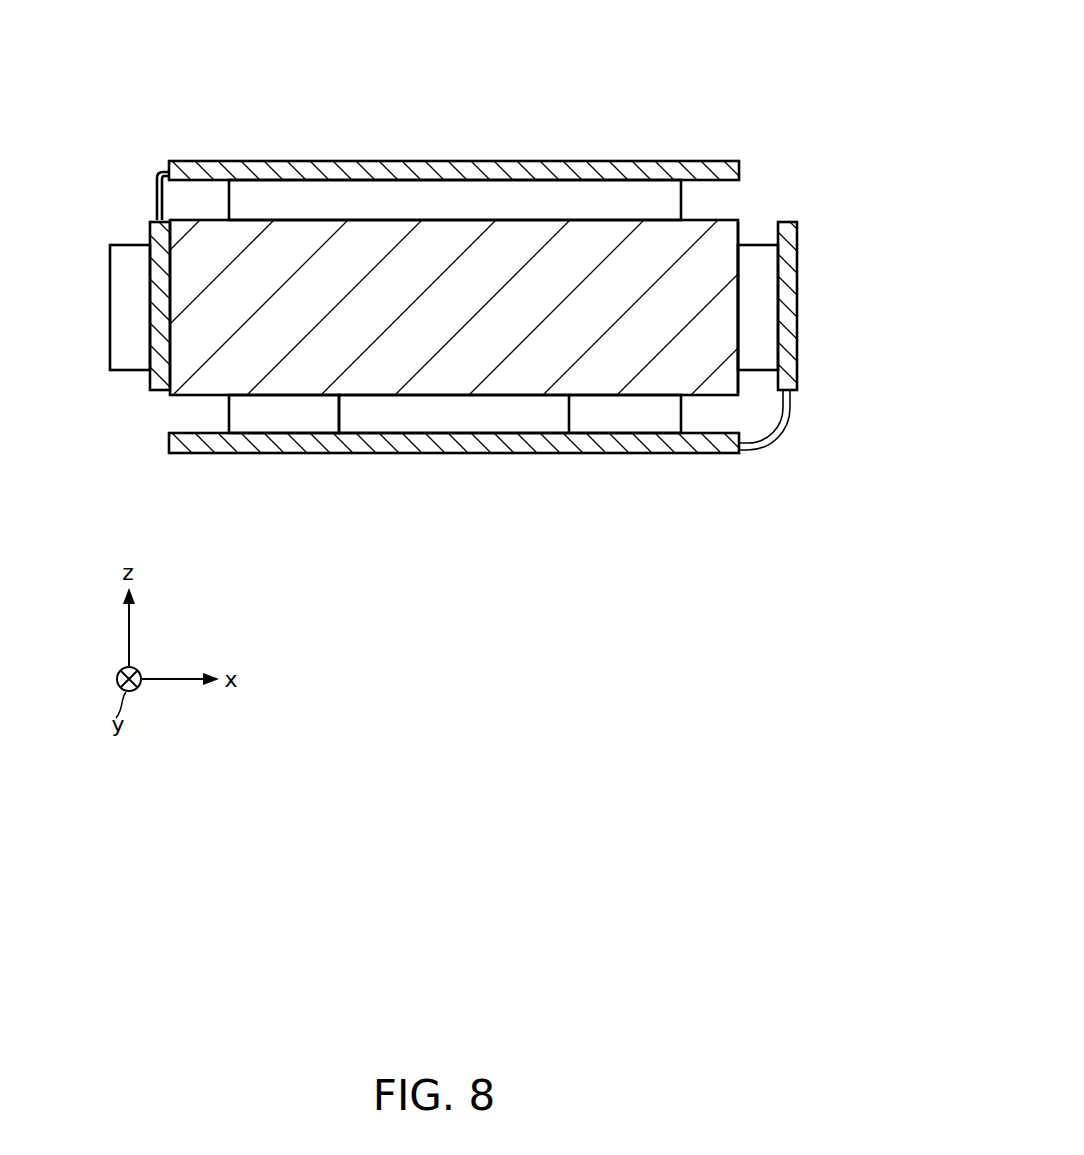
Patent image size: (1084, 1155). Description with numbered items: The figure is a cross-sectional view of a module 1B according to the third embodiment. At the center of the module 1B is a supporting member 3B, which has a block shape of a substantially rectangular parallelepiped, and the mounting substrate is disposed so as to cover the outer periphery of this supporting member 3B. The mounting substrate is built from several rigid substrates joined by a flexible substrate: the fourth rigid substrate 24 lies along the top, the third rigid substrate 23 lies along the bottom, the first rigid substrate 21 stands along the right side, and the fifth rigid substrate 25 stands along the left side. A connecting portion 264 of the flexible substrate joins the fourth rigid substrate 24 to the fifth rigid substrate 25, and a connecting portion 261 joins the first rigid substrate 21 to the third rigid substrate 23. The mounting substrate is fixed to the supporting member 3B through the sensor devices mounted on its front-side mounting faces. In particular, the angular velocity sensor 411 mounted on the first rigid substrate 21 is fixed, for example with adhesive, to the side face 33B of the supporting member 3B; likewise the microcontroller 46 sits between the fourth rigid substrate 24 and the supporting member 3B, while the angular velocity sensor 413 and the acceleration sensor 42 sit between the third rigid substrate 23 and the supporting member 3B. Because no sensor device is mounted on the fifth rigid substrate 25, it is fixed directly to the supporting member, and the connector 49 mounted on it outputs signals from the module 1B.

The module 1B is at (703, 95).
The supporting member 3B is at (303, 290).
The fourth rigid substrate 24 is at (384, 170).
The microcontroller 46 is at (548, 200).
The connecting portion 264 is at (158, 172).
The connector 49 is at (125, 296).
The fifth rigid substrate 25 is at (160, 337).
The side face 33B is at (740, 290).
The first rigid substrate 21 is at (788, 305).
The angular velocity sensor 411 is at (768, 357).
The connecting portion 261 is at (790, 418).
The angular velocity sensor 413 is at (284, 417).
The third rigid substrate 23 is at (476, 443).
The acceleration sensor 42 is at (617, 418).